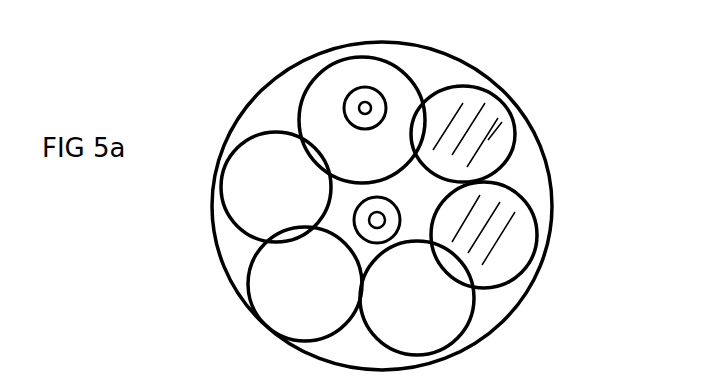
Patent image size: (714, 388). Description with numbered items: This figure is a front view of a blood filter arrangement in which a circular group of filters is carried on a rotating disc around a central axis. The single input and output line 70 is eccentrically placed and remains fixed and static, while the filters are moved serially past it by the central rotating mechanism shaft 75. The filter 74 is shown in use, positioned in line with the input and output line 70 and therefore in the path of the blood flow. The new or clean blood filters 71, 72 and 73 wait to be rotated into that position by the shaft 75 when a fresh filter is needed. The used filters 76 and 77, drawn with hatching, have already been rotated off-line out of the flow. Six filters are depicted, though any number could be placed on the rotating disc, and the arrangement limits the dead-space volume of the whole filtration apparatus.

The single input and output line 70 is at (369, 106).
The new/clean blood filter 71 is at (447, 326).
The new/clean blood filter 72 is at (272, 317).
The new/clean blood filter 73 is at (212, 176).
The filter in use 74 is at (376, 66).
The central rotating mechanism shaft 75 is at (393, 213).
The used filter 76 is at (503, 137).
The used filter 77 is at (525, 253).